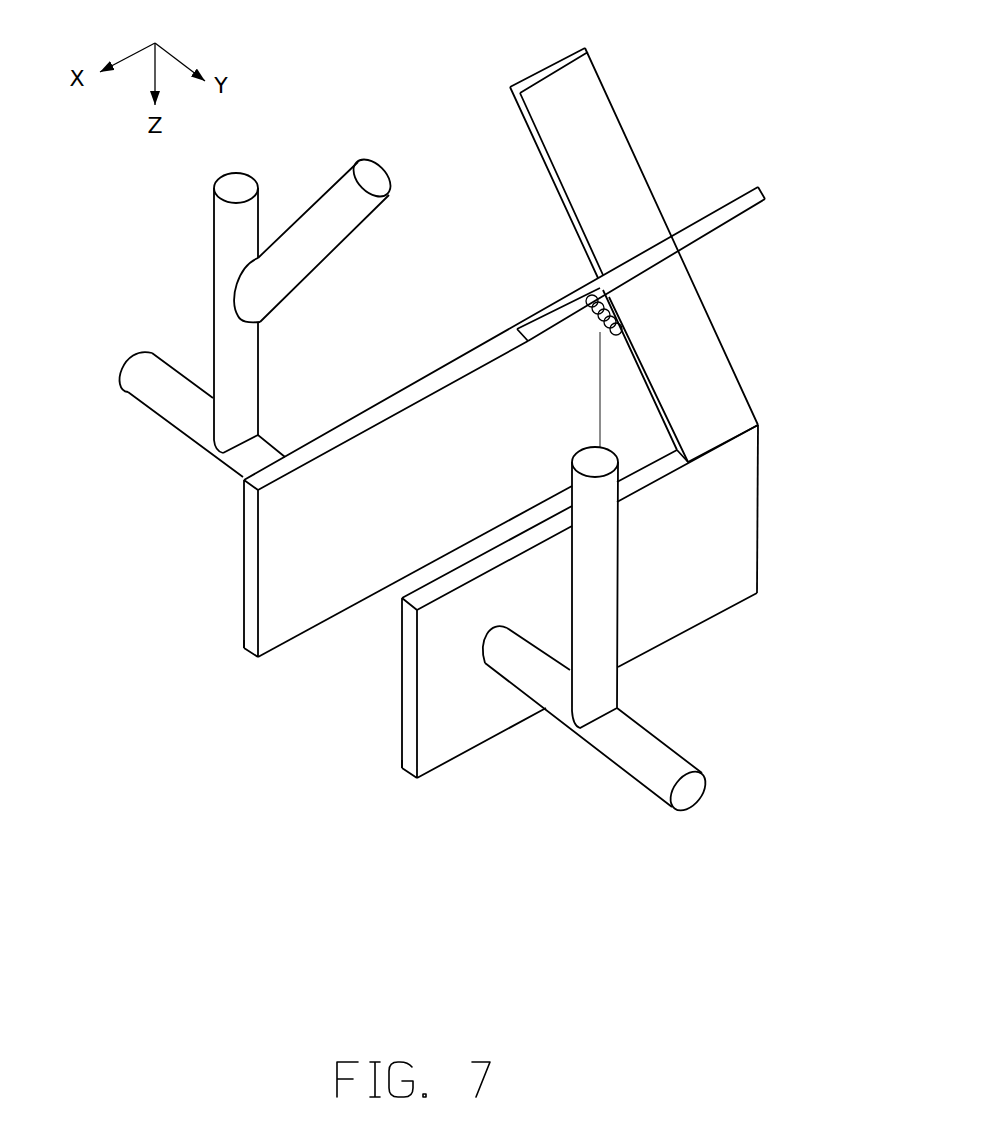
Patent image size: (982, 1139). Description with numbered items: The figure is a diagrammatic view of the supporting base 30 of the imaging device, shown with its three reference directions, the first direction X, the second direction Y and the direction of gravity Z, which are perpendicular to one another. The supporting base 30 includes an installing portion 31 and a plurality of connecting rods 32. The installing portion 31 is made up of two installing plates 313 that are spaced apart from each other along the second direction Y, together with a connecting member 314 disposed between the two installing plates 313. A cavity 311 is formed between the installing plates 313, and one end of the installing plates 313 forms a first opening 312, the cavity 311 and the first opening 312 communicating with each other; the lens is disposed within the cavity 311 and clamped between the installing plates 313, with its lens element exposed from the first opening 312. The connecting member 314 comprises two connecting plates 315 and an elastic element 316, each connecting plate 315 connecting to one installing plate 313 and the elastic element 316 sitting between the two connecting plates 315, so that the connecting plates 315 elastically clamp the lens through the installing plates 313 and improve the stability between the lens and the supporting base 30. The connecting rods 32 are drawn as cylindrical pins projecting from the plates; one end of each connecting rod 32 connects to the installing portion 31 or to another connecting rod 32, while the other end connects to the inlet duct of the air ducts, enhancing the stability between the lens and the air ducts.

The supporting base 30 is at (425, 34).
The installing portion 31 is at (772, 488).
The connecting rods 32 is at (345, 200).
The cavity 311 is at (347, 582).
The first opening 312 is at (266, 521).
The installing plates 313 is at (248, 620).
The connecting member 314 is at (462, 143).
The connecting plates 315 is at (578, 152).
The elastic element 316 is at (597, 305).